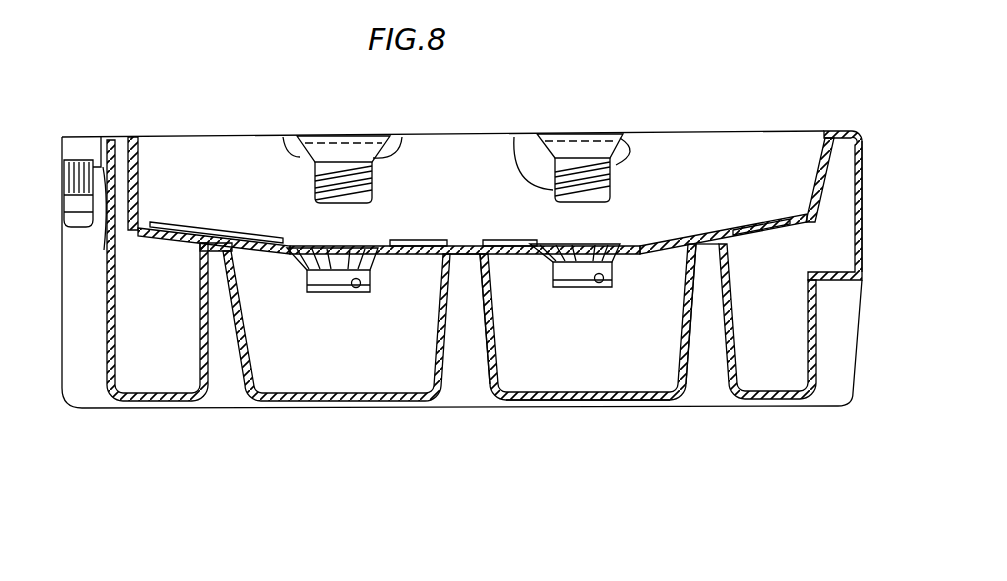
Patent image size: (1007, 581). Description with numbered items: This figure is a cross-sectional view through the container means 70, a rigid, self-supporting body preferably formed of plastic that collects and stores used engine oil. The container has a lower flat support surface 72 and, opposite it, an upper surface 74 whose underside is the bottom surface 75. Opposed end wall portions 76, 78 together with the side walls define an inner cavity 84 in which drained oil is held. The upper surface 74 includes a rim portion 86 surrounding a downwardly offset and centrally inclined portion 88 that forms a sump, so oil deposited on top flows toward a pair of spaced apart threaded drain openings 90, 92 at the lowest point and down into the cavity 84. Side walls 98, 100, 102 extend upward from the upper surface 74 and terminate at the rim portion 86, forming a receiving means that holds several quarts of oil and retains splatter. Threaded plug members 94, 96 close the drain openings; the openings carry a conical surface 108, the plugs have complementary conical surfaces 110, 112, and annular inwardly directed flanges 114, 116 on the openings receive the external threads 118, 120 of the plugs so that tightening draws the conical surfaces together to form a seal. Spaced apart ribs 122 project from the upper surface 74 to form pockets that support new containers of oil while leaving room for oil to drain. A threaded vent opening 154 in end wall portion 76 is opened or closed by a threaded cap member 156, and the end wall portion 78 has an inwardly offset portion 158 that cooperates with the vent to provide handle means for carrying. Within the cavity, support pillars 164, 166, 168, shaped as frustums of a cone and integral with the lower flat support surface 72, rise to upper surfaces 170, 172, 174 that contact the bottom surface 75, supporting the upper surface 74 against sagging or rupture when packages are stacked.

The container means 70 is at (270, 410).
The lower flat support surface 72 is at (555, 400).
The upper surface 74 is at (448, 245).
The bottom surface 75 is at (516, 258).
The end wall portion 76 is at (103, 333).
The end wall portion 78 is at (865, 200).
The inner cavity 84 is at (800, 325).
The rim portion 86 is at (840, 131).
The centrally inclined portion 88 is at (197, 237).
The threaded drain opening 90 is at (355, 288).
The threaded drain opening 92 is at (594, 283).
The threaded plug member 94 is at (402, 137).
The threaded plug member 96 is at (637, 147).
The side wall 98 is at (812, 150).
The side wall 100 is at (700, 143).
The side wall 102 is at (140, 155).
The conical surface 108 is at (618, 246).
The conical surface 110 is at (281, 137).
The conical surface 112 is at (537, 133).
The annular inwardly directed flange 114 is at (310, 293).
The annular inwardly directed flange 116 is at (555, 287).
The external threads 118 is at (315, 180).
The external threads 120 is at (514, 137).
The ribs 122 is at (248, 238).
The threaded vent opening 154 is at (101, 160).
The threaded cap member 156 is at (80, 160).
The inwardly offset portion 158 is at (815, 292).
The support pillar 164 is at (198, 300).
The support pillar 166 is at (440, 328).
The support pillar 168 is at (687, 327).
The upper surface of support pillar 170 is at (197, 248).
The upper surface of support pillar 172 is at (443, 258).
The upper surface of support pillar 174 is at (693, 246).